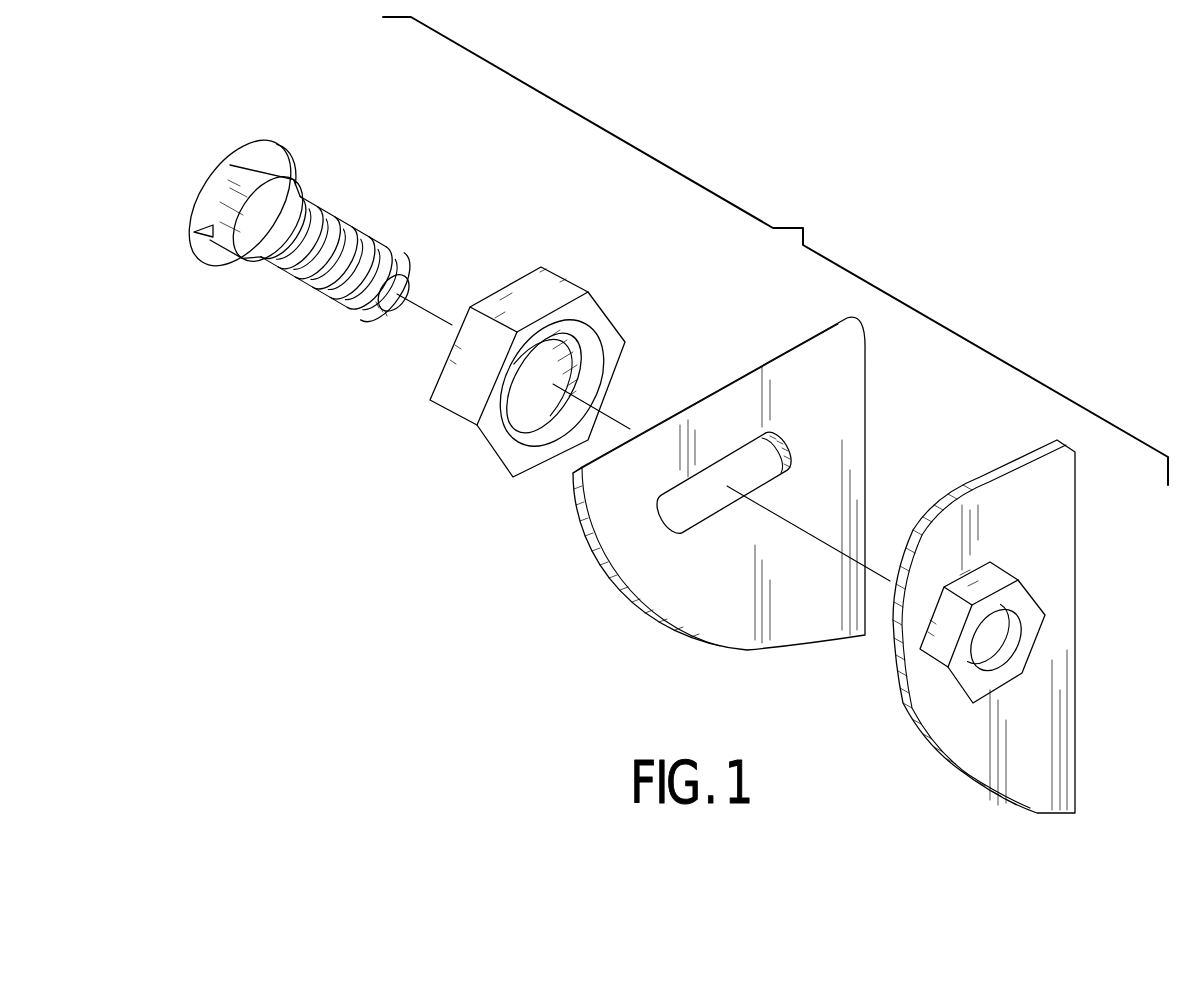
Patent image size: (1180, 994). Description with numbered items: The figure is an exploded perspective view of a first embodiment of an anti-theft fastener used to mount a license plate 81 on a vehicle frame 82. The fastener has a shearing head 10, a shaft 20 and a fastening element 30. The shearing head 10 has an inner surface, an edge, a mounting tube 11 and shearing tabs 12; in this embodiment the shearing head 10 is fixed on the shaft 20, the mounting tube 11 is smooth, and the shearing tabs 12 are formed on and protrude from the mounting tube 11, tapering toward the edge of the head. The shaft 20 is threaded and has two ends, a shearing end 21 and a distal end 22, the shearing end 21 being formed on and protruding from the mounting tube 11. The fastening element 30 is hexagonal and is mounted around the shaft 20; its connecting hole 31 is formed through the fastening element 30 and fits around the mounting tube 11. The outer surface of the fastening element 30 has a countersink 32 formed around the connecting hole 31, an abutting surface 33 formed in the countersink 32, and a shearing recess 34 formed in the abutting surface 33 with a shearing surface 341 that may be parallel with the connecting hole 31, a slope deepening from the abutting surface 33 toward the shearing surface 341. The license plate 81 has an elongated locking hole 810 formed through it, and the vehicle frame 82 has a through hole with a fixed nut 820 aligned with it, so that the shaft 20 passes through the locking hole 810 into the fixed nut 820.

The shearing head 10 is at (284, 222).
The mounting tube 11 is at (213, 210).
The shearing tab 12 is at (195, 232).
The shaft 20 is at (366, 214).
The shearing end 21 is at (262, 252).
The distal end 22 is at (398, 262).
The fastening element 30 is at (549, 360).
The connecting hole 31 is at (528, 385).
The countersink 32 is at (585, 388).
The abutting surface 33 is at (583, 374).
The shearing recess 34 is at (505, 413).
The shearing surface 341 is at (513, 430).
The license plate 81 is at (751, 483).
The locking hole 810 is at (790, 448).
The vehicle frame 82 is at (1020, 626).
The fixed nut 820 is at (1035, 607).